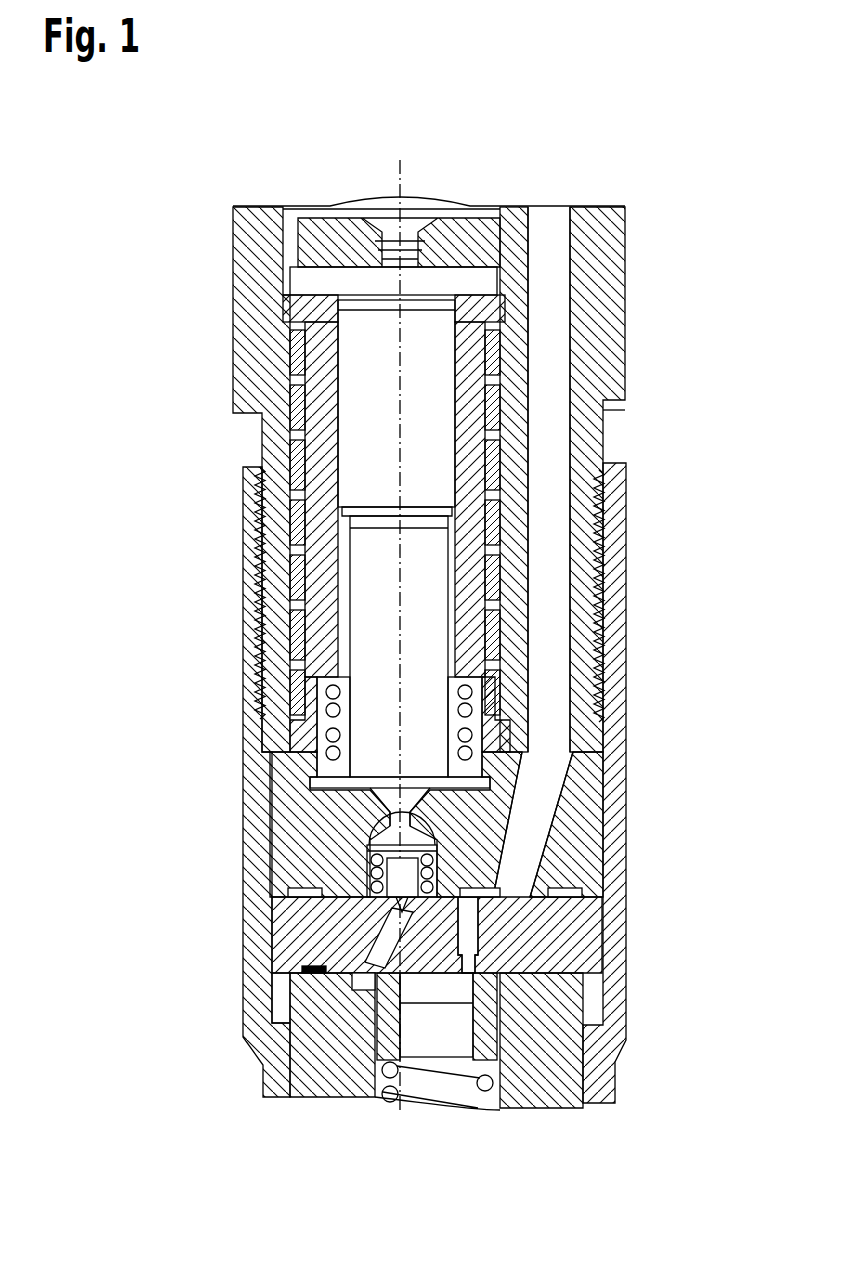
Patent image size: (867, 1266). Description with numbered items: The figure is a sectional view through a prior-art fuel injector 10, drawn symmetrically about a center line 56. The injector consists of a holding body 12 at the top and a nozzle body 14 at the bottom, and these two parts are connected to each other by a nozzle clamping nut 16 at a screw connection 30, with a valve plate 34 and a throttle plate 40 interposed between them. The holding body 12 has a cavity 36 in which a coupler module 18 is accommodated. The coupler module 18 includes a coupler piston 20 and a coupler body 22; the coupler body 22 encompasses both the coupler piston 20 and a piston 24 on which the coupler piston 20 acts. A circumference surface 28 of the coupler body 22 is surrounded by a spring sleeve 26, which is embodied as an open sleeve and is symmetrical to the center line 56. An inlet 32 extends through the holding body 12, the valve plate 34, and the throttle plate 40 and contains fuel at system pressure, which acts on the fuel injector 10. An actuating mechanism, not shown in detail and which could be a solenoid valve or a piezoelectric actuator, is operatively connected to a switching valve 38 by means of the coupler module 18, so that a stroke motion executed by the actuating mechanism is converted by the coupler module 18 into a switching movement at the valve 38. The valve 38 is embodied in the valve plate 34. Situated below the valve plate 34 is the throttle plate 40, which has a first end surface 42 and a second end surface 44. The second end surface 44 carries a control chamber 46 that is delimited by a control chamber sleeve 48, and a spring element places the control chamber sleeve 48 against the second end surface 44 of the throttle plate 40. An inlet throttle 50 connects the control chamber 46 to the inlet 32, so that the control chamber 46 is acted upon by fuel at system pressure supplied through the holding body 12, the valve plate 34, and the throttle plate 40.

The fuel injector 10 is at (662, 186).
The holding body 12 is at (600, 335).
The nozzle body 14 is at (553, 1063).
The nozzle clamping nut 16 is at (612, 758).
The coupler module 18 is at (552, 510).
The coupler piston 20 is at (430, 425).
The coupler body 22 is at (470, 450).
The piston 24 is at (425, 680).
The spring sleeve 26 is at (500, 535).
The circumference surface 28 is at (293, 633).
The screw connection 30 is at (608, 598).
The inlet 32 is at (550, 245).
The valve plate 34 is at (582, 835).
The cavity 36 is at (293, 563).
The switching valve 38 is at (372, 875).
The throttle plate 40 is at (580, 920).
The first end surface 42 is at (290, 910).
The second end surface 44 is at (302, 966).
The control chamber 46 is at (360, 1010).
The control chamber sleeve 48 is at (545, 1025).
The inlet throttle 50 is at (462, 945).
The center line 56 is at (355, 437).